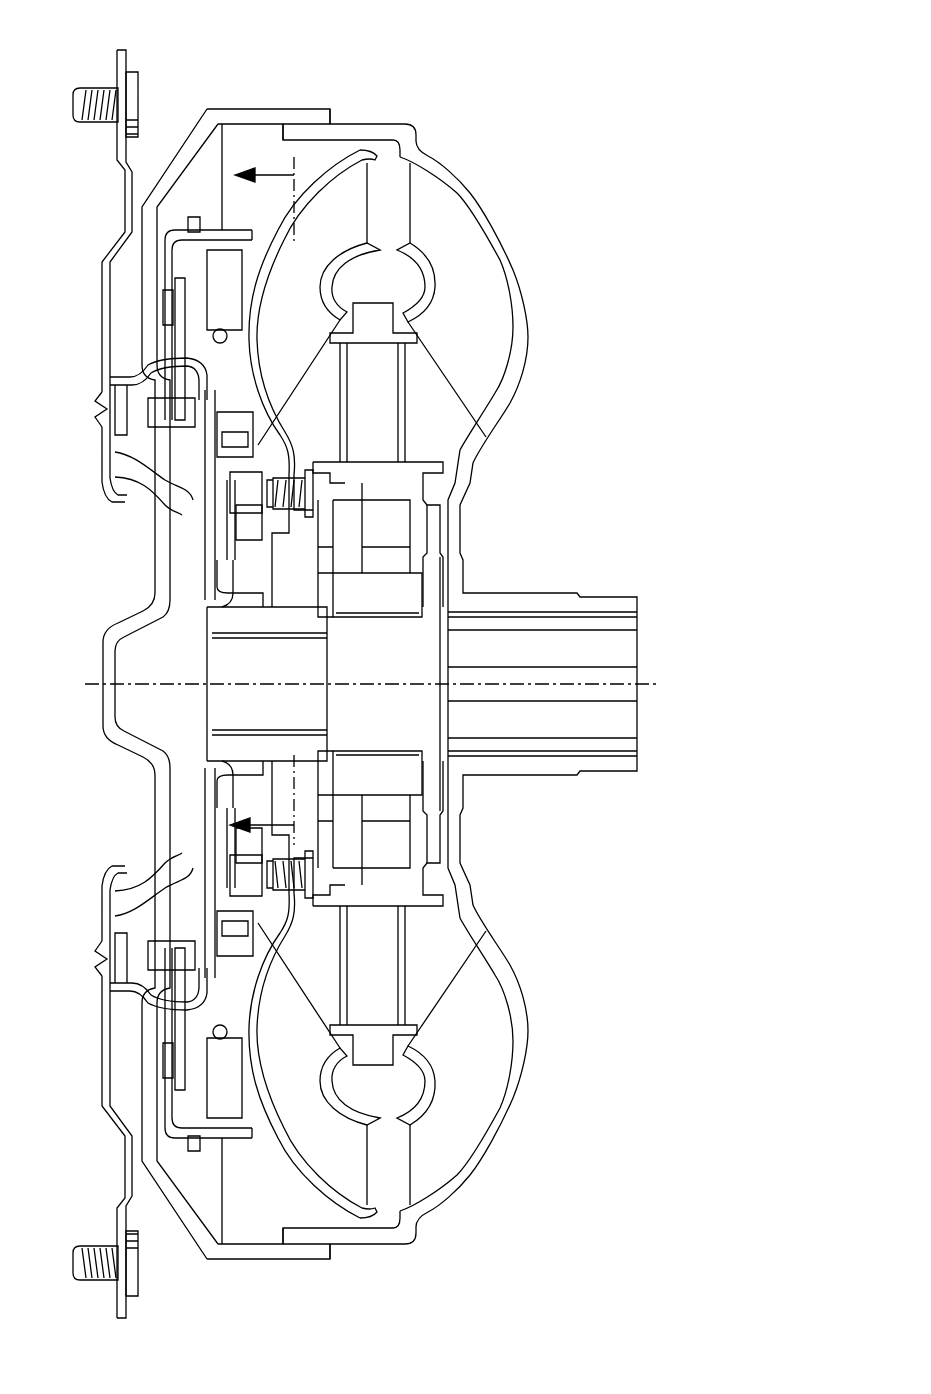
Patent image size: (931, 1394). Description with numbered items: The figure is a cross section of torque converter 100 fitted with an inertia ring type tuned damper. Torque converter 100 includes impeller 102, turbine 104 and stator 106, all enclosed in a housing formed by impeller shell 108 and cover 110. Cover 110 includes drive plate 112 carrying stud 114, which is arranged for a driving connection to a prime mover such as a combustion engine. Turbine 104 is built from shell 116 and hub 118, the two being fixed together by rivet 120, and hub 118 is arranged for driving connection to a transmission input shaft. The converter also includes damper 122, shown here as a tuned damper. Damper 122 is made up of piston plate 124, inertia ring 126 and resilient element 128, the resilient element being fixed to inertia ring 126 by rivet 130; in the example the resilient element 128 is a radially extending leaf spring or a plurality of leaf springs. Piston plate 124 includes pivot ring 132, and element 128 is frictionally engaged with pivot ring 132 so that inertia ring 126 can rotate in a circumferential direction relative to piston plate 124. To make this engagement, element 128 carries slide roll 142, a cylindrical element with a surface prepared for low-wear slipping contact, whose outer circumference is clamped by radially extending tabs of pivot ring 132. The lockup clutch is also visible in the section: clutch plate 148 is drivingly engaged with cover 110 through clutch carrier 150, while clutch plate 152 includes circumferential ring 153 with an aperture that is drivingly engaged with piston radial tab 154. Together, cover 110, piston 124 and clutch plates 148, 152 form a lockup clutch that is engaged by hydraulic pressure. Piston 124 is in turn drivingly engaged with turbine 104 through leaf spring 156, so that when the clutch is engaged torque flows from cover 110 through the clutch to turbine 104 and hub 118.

The torque converter 100 is at (538, 96).
The impeller 102 is at (488, 304).
The turbine 104 is at (353, 227).
The stator 106 is at (393, 385).
The impeller shell 108 is at (503, 415).
The cover 110 is at (303, 120).
The drive plate 112 is at (125, 198).
The stud 114 is at (98, 92).
The shell 116 is at (362, 158).
The hub 118 is at (303, 600).
The rivet 120 is at (313, 490).
The damper 122 is at (189, 88).
The piston plate 124 is at (228, 583).
The inertia ring 126 is at (225, 267).
The resilient element 128 is at (222, 358).
The rivet 130 is at (213, 336).
The pivot ring 132 is at (225, 487).
The slide roll 142 is at (222, 437).
The clutch plate 148 is at (180, 392).
The clutch carrier 150 is at (205, 478).
The clutch plate 152 is at (168, 293).
The circumferential ring 153 is at (222, 228).
The piston radial tab 154 is at (188, 220).
The leaf spring 156 is at (244, 514).